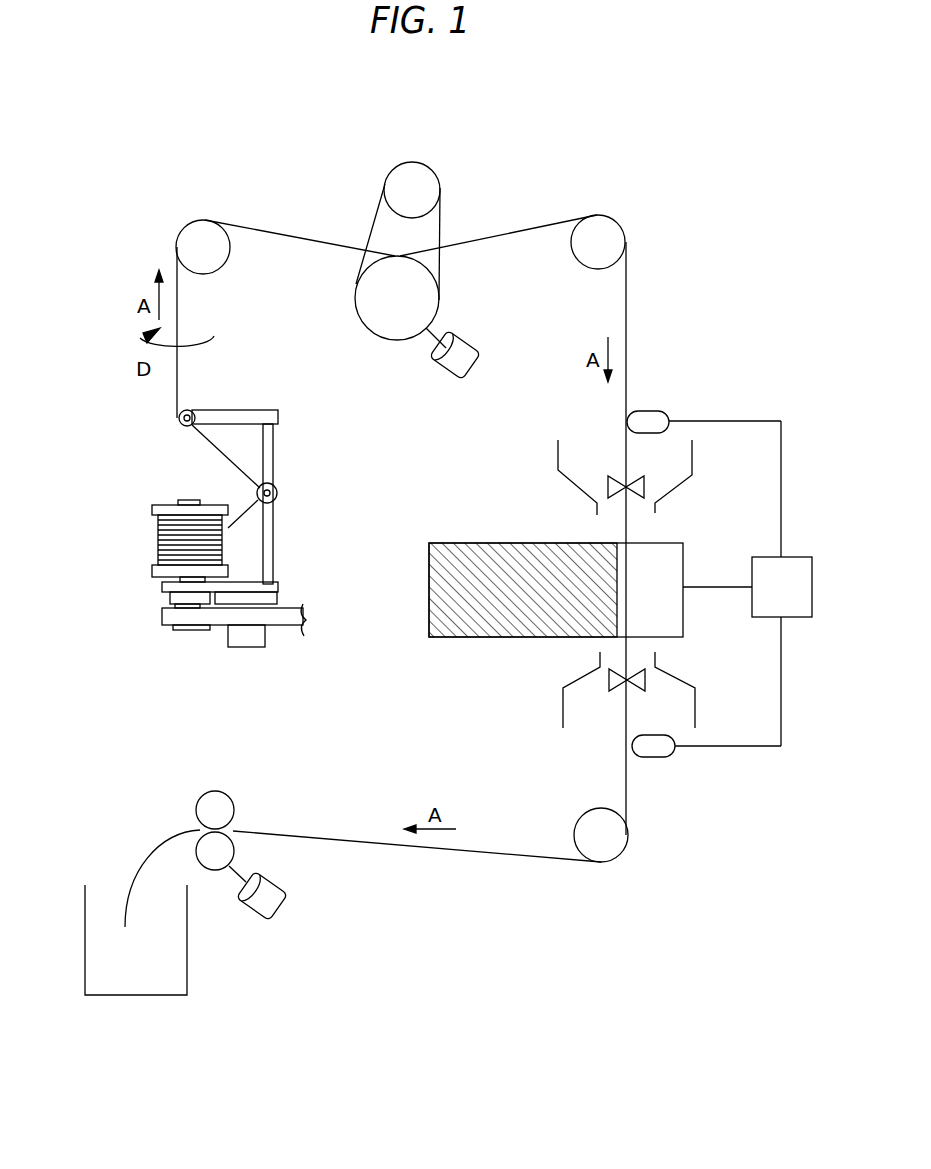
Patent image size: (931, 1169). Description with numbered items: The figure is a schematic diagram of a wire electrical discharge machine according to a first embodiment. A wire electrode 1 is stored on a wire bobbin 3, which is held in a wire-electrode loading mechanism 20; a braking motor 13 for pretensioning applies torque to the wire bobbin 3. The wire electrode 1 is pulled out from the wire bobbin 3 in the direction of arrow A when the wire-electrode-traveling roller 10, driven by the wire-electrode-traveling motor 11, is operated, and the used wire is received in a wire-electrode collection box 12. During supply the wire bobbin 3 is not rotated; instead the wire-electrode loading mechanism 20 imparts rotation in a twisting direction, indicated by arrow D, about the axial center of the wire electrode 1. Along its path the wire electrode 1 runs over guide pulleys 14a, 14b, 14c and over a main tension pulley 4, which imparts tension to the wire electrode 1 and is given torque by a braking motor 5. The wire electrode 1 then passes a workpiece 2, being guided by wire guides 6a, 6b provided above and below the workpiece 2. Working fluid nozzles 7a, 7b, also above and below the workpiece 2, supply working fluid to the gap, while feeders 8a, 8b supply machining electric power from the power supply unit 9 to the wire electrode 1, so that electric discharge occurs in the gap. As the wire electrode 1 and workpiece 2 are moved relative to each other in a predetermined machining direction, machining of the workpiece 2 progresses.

The wire electrode 1 is at (628, 325).
The workpiece 2 is at (428, 590).
The wire bobbin 3 is at (152, 508).
The main tension pulley 4 is at (430, 296).
The braking motor 5 is at (448, 376).
The wire guide 6a is at (607, 488).
The wire guide 6b is at (609, 676).
The working fluid nozzle 7a is at (558, 452).
The working fluid nozzle 7b is at (563, 712).
The feeder 8a is at (646, 413).
The feeder 8b is at (654, 756).
The power supply unit for machining 9 is at (790, 558).
The wire-electrode-traveling roller 10 is at (215, 793).
The wire-electrode-traveling motor 11 is at (272, 887).
The wire-electrode collection box 12 is at (187, 967).
The braking motor for pretensioning 13 is at (248, 640).
The guide pulley 14a is at (198, 226).
The guide pulley 14b is at (604, 226).
The guide pulley 14c is at (628, 838).
The wire-electrode loading mechanism 20 is at (150, 476).